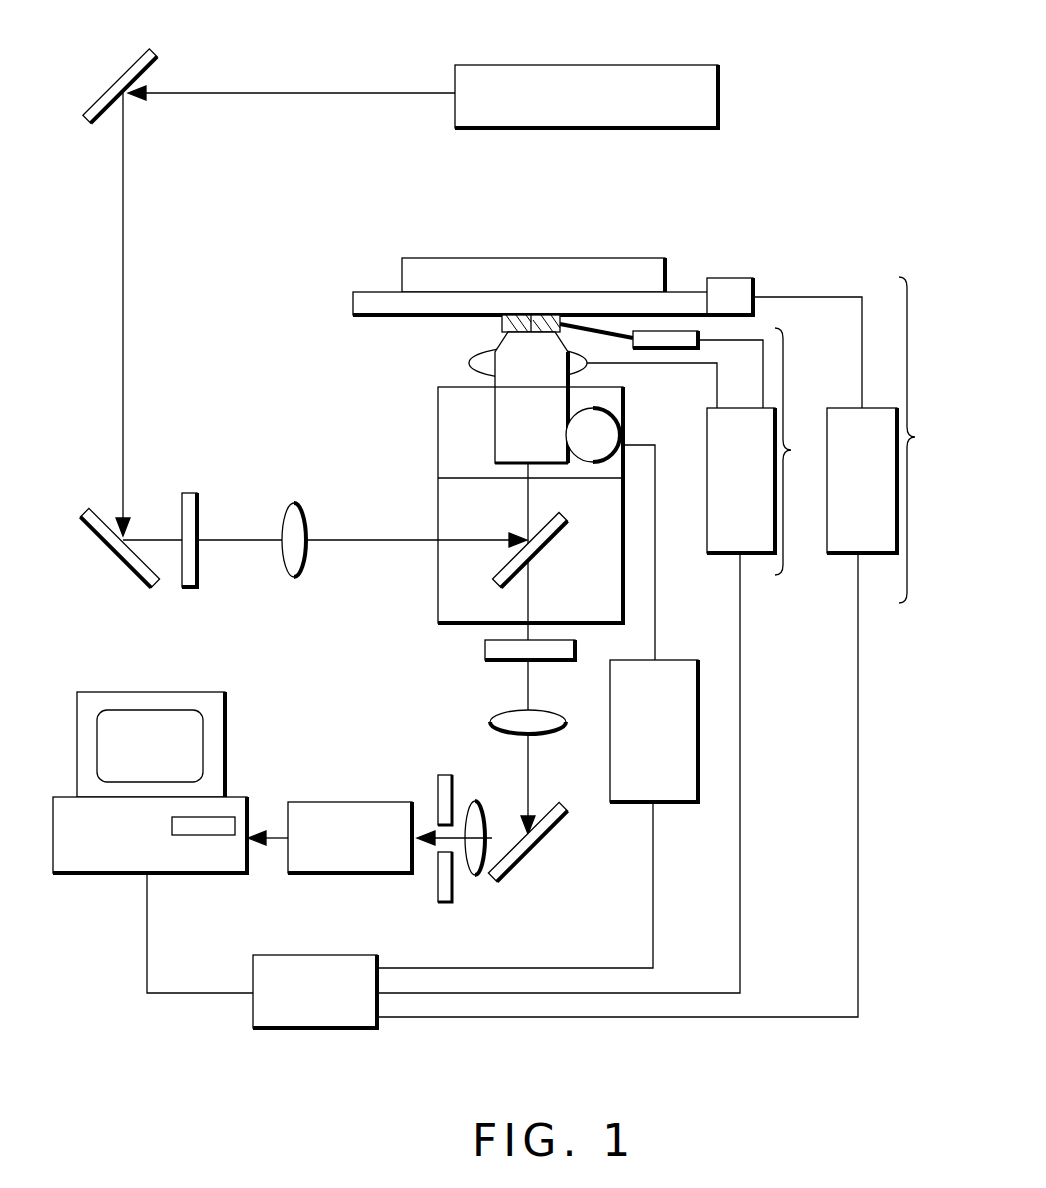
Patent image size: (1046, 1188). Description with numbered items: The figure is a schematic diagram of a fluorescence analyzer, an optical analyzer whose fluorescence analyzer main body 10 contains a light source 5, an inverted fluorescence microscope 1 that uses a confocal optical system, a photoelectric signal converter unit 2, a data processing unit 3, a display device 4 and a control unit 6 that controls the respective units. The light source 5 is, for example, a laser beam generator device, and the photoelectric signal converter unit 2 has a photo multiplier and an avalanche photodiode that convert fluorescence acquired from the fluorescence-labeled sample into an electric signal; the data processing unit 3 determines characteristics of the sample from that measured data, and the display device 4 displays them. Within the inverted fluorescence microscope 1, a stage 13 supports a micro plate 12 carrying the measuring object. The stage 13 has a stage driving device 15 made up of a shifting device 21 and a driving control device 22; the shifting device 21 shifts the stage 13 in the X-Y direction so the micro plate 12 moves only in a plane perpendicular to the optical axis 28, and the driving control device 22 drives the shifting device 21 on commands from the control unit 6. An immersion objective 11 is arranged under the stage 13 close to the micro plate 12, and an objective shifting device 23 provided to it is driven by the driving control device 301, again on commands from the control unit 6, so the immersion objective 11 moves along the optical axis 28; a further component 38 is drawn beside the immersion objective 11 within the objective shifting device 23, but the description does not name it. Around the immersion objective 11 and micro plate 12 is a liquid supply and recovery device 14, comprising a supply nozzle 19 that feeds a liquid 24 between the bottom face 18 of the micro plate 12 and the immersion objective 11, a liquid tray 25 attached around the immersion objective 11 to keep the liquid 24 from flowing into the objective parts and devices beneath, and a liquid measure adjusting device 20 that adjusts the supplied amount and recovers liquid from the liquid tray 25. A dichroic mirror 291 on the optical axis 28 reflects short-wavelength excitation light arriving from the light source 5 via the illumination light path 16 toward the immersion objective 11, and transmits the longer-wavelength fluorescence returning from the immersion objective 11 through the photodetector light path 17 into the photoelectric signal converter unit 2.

The inverted fluorescence microscope 1 is at (375, 661).
The photoelectric signal converter unit 2 is at (316, 877).
The data processing unit 3 is at (92, 875).
The display device 4 is at (225, 715).
The light source 5 is at (672, 65).
The control unit 6 is at (280, 1030).
The fluorescence analyzer main body 10 is at (93, 330).
The immersion objective 11 is at (497, 440).
The micro plate 12 is at (636, 258).
The stage 13 is at (363, 316).
The liquid supply and recovery device 14 is at (801, 451).
The stage driving device 15 is at (925, 440).
The illumination light path 16 is at (268, 573).
The photodetector light path 17 is at (469, 761).
The bottom face 18 is at (431, 290).
The supply nozzle 19 is at (698, 345).
The liquid measure adjusting device 20 is at (716, 555).
The shifting device 21 is at (738, 278).
The driving control device 22 is at (838, 555).
The objective shifting device 23 is at (440, 460).
The liquid 24 is at (500, 326).
The liquid tray 25 is at (470, 357).
The optical axis 28 is at (532, 500).
The focusing drive 38 is at (612, 425).
The dichroic mirror 291 is at (558, 536).
The driving control device 301 is at (618, 803).